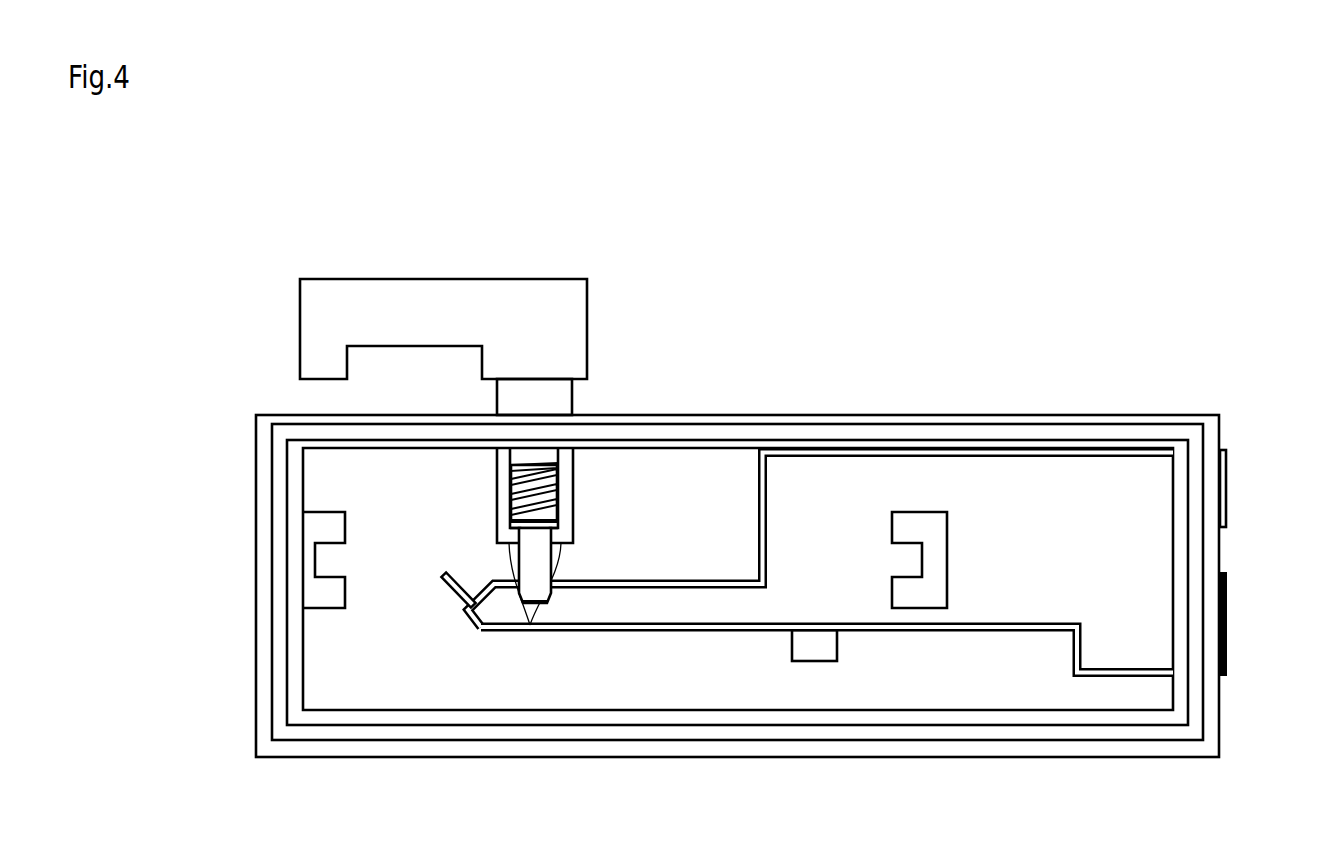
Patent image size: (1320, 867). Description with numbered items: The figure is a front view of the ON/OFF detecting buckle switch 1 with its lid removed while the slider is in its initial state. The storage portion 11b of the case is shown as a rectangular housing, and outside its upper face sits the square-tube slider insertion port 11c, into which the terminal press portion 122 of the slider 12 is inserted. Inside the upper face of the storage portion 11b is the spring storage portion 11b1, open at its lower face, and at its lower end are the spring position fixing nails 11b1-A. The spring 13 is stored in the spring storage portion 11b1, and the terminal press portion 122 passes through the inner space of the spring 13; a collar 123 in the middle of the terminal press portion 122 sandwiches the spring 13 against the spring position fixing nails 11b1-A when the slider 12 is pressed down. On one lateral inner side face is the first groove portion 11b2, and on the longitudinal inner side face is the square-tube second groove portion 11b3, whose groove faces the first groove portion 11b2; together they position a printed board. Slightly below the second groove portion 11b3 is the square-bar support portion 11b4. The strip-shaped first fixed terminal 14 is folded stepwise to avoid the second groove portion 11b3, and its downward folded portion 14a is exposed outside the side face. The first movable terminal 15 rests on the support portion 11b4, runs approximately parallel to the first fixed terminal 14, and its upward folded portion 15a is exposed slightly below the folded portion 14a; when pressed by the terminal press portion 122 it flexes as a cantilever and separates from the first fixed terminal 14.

The ON/OFF detecting buckle switch 1 is at (778, 512).
The slider 12 is at (503, 279).
The slider insertion port 11c is at (575, 398).
The storage portion 11b is at (655, 757).
The spring storage portion 11b1 is at (497, 484).
The spring position fixing nails 11b1-A is at (530, 607).
The first groove portion 11b2 is at (325, 597).
The second groove portion 11b3 is at (892, 585).
The support portion 11b4 is at (816, 662).
The spring 13 is at (552, 497).
The terminal press portion 122 is at (552, 555).
The collar 123 is at (552, 456).
The first fixed terminal 14 is at (767, 498).
The folded portion 14a is at (1224, 500).
The first movable terminal 15 is at (1046, 620).
The folded portion 15a is at (1224, 640).